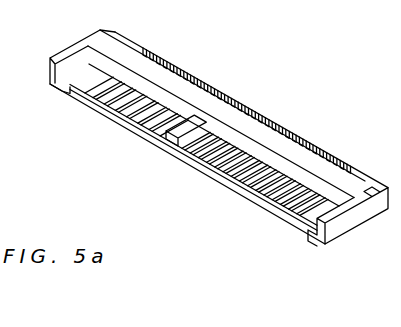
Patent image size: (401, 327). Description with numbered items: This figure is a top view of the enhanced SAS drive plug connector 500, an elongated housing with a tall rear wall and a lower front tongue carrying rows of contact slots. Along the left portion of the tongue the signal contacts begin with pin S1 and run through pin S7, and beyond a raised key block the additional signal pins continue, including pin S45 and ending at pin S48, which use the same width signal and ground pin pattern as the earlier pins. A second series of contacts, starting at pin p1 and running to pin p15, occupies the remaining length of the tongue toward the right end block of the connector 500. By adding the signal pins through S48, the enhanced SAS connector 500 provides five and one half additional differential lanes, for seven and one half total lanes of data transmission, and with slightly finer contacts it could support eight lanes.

The enhanced SAS Connector 500 is at (208, 158).
The signal pin S1 is at (87, 92).
The signal pin S7 is at (137, 123).
The signal pin S48 is at (165, 110).
The signal pin S45 is at (188, 118).
The pin p1 is at (181, 143).
The pin p15 is at (296, 213).